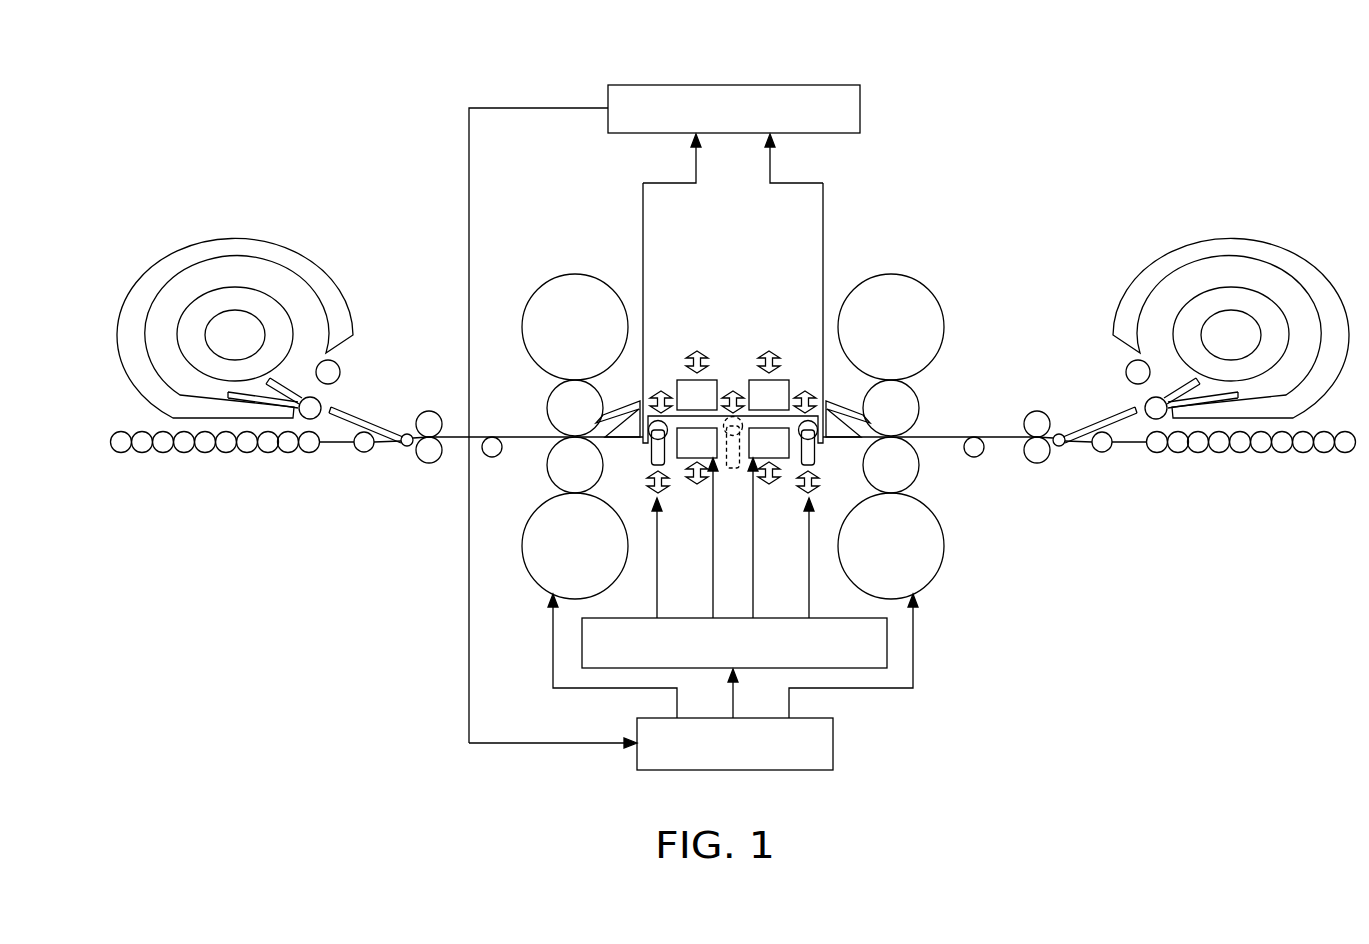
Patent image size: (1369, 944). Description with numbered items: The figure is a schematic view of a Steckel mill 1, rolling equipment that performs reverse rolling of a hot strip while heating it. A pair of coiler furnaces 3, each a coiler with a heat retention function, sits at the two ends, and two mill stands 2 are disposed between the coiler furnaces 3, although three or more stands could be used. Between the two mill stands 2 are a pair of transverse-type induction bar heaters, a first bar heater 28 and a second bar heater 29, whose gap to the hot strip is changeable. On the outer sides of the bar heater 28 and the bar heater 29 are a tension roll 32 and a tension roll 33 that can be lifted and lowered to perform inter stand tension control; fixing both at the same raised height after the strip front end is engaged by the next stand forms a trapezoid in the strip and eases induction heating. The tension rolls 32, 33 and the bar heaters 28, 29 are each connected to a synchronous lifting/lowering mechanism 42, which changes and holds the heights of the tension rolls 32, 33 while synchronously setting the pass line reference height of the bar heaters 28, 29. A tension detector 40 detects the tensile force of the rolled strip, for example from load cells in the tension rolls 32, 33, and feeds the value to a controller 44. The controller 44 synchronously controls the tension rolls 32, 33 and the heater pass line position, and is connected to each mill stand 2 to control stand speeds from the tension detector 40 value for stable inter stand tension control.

The Steckel mill 1 is at (976, 117).
The mill stand 2 is at (546, 272).
The coiler furnace 3 is at (272, 216).
The bar heater 28 is at (675, 377).
The bar heater 29 is at (789, 377).
The tension roll 32 is at (651, 456).
The tension roll 33 is at (815, 456).
The tension detector 40 is at (861, 108).
The synchronous lifting/lowering mechanism 42 is at (888, 650).
The controller 44 is at (834, 745).